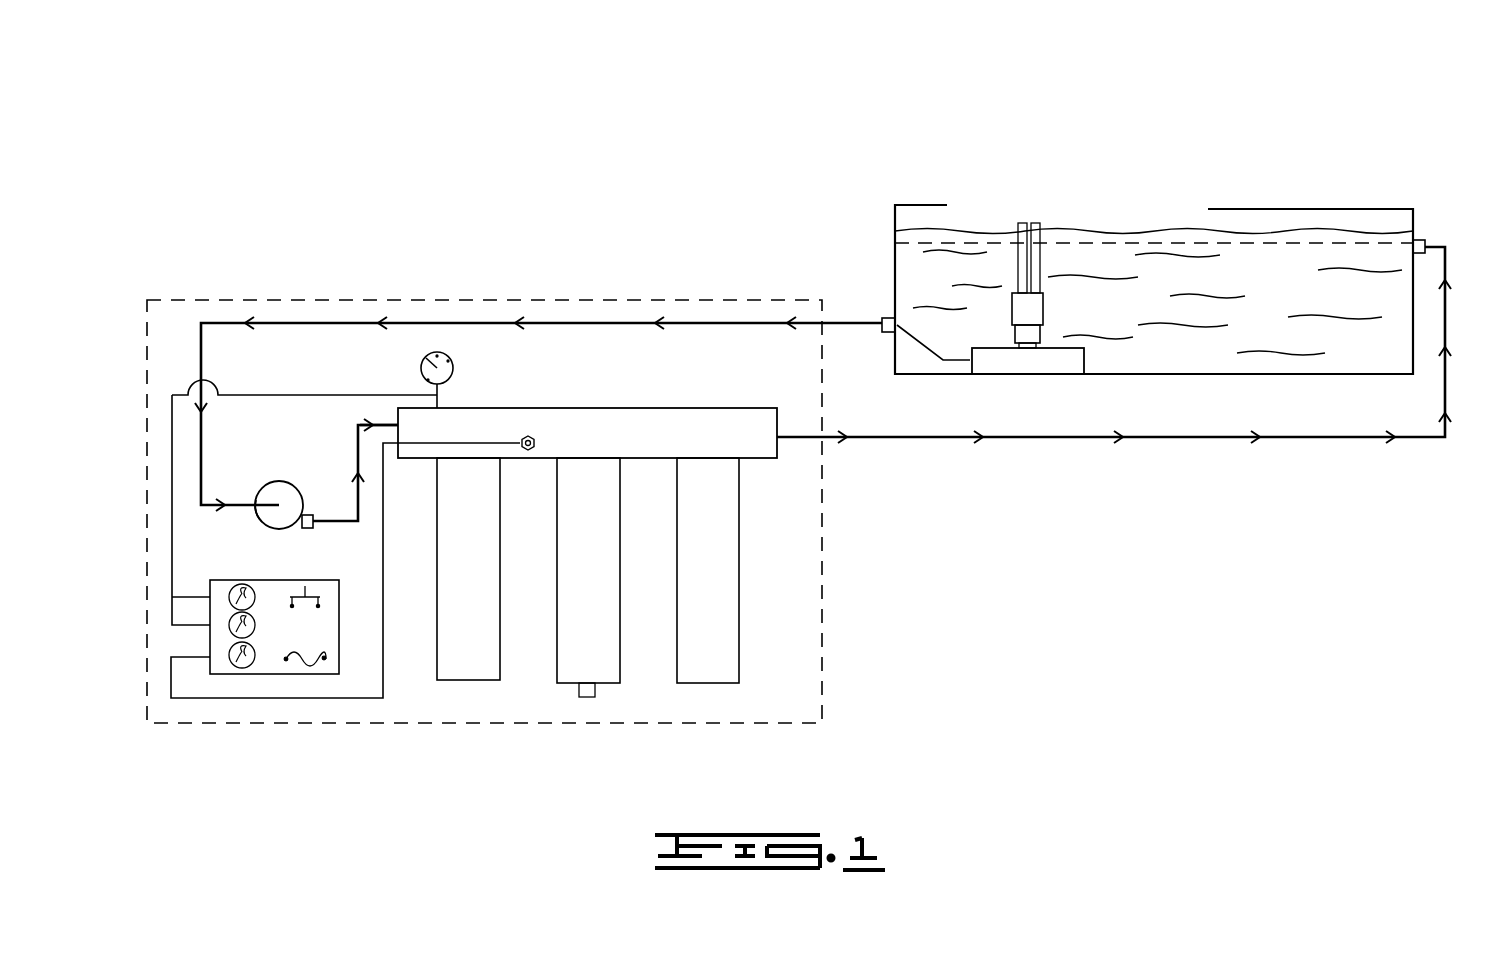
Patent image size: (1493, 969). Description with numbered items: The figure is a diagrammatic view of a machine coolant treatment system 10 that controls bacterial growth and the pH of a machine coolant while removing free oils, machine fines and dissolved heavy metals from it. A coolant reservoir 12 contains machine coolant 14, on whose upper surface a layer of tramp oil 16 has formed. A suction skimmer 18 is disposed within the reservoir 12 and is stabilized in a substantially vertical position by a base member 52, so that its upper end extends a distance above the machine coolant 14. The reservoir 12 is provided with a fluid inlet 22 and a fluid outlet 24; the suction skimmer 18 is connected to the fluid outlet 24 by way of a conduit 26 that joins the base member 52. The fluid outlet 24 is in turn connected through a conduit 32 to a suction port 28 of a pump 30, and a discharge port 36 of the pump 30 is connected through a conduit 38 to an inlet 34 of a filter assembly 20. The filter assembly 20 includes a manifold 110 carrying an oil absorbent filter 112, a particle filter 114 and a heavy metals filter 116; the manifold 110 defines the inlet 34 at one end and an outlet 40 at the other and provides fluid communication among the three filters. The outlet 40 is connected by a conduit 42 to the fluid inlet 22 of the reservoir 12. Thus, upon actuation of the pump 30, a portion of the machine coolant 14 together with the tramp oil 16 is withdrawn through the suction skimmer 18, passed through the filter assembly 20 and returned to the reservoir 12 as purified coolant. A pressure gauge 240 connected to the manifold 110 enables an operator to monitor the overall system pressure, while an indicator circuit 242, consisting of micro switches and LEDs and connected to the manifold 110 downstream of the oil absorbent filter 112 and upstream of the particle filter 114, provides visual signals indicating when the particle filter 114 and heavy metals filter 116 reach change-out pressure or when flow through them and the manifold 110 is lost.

The machine coolant treatment system 10 is at (1441, 144).
The coolant reservoir 12 is at (1323, 200).
The machine coolant 14 is at (1293, 293).
The tramp oil 16 is at (1152, 240).
The suction skimmer 18 is at (1042, 222).
The filter assembly 20 is at (826, 560).
The fluid inlet 22 is at (1425, 243).
The fluid outlet 24 is at (885, 318).
The conduit 26 is at (925, 340).
The suction port 28 is at (279, 503).
The pump 30 is at (265, 520).
The conduit 32 is at (560, 320).
The inlet 34 is at (393, 423).
The discharge port 36 is at (305, 530).
The conduit 38 is at (357, 488).
The outlet 40 is at (784, 433).
The conduit 42 is at (1190, 441).
The base member 52 is at (1050, 347).
The manifold 110 is at (595, 402).
The oil absorbent filter 112 is at (446, 684).
The particle filter 114 is at (566, 687).
The heavy metals filter 116 is at (706, 687).
The pressure gauge 240 is at (455, 367).
The indicator circuit 242 is at (276, 679).